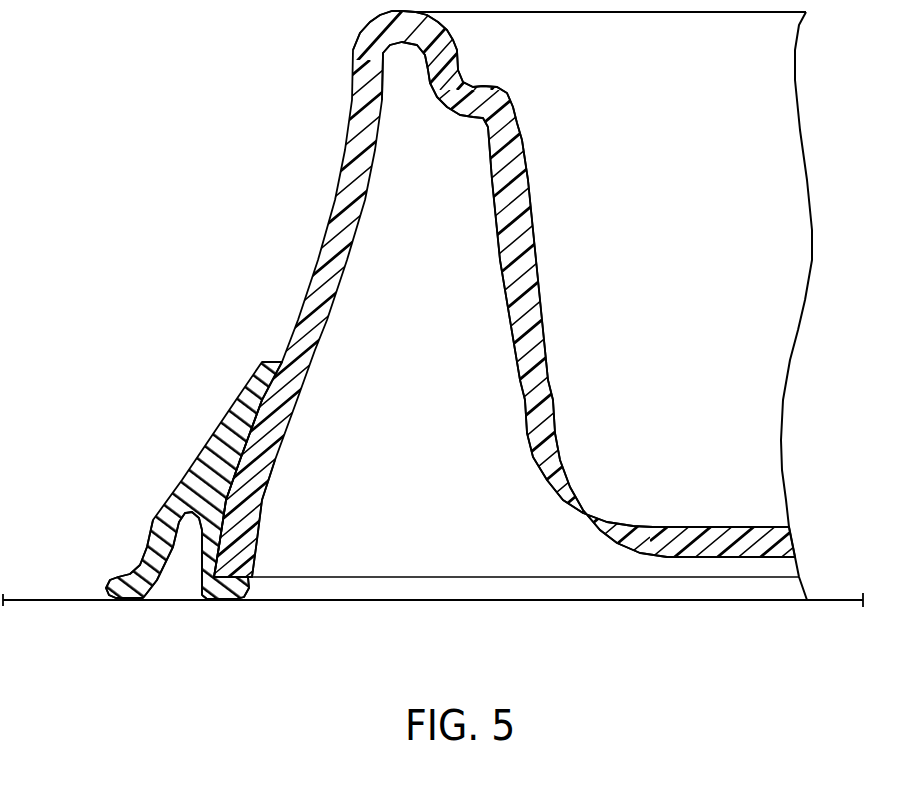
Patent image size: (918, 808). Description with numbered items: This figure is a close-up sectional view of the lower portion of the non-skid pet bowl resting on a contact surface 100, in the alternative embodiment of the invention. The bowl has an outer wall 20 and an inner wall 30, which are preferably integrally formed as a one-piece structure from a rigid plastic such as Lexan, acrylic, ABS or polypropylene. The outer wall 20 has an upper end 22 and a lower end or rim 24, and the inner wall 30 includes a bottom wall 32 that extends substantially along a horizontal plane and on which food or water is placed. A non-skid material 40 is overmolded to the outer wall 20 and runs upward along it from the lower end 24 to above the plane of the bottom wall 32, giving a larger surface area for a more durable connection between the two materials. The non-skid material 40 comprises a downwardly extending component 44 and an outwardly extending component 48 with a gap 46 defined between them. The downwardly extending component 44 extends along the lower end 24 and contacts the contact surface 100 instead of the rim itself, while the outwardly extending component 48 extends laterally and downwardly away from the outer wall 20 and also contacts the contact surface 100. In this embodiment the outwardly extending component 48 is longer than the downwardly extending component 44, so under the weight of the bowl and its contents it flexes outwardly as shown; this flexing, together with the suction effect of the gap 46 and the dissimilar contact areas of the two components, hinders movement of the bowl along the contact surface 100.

The outer wall 20 is at (345, 145).
The upper end 22 is at (383, 40).
The lower end or rim 24 is at (243, 562).
The inner wall 30 is at (537, 250).
The bottom wall 32 is at (727, 530).
The non-skid material 40 is at (180, 373).
The downwardly extending component 44 is at (222, 600).
The gap 46 is at (188, 552).
The outwardly extending component 48 is at (122, 557).
The contact surface 100 is at (62, 598).